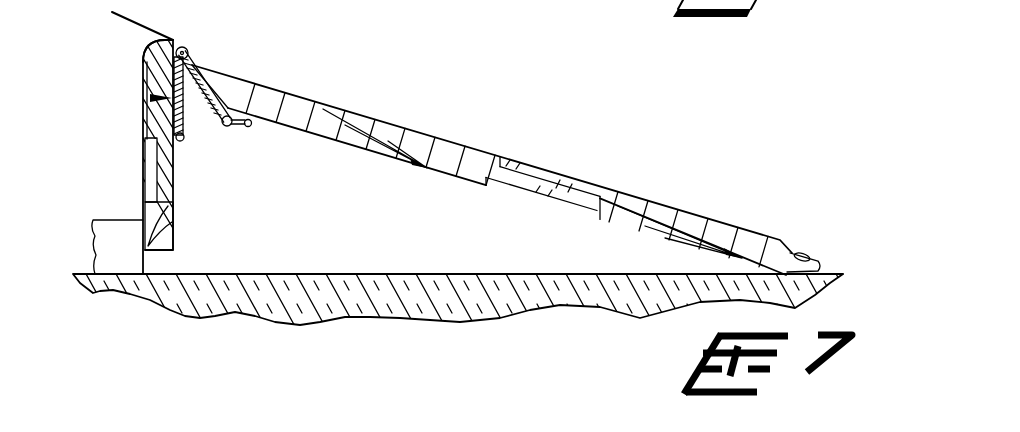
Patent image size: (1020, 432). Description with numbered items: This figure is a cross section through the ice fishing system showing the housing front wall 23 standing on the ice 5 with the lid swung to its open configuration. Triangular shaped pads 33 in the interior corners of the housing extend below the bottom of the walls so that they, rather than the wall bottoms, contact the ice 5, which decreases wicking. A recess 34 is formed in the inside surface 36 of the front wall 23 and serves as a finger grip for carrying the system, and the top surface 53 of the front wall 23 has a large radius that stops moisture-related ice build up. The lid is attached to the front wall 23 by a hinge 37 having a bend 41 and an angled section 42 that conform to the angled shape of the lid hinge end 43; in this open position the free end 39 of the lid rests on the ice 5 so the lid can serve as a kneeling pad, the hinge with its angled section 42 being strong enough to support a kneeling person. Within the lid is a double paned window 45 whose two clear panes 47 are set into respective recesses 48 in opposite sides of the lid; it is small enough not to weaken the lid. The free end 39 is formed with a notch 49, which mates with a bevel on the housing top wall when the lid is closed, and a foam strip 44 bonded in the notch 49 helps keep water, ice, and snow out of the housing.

The ice 5 is at (376, 274).
The front wall 23 is at (165, 233).
The triangular shaped pads 33 is at (118, 230).
The recess 34 is at (145, 158).
The inside surface 36 is at (143, 90).
The hinge 37 is at (193, 42).
The free end 39 is at (813, 274).
The bend 41 is at (199, 110).
The angled section 42 is at (250, 128).
The lid hinge end 43 is at (272, 98).
The foam strip 44 is at (812, 257).
The window 45 is at (582, 168).
The clear panes 47 is at (510, 193).
The recesses 48 is at (500, 158).
The notch 49 is at (796, 252).
The top surface 53 is at (154, 50).